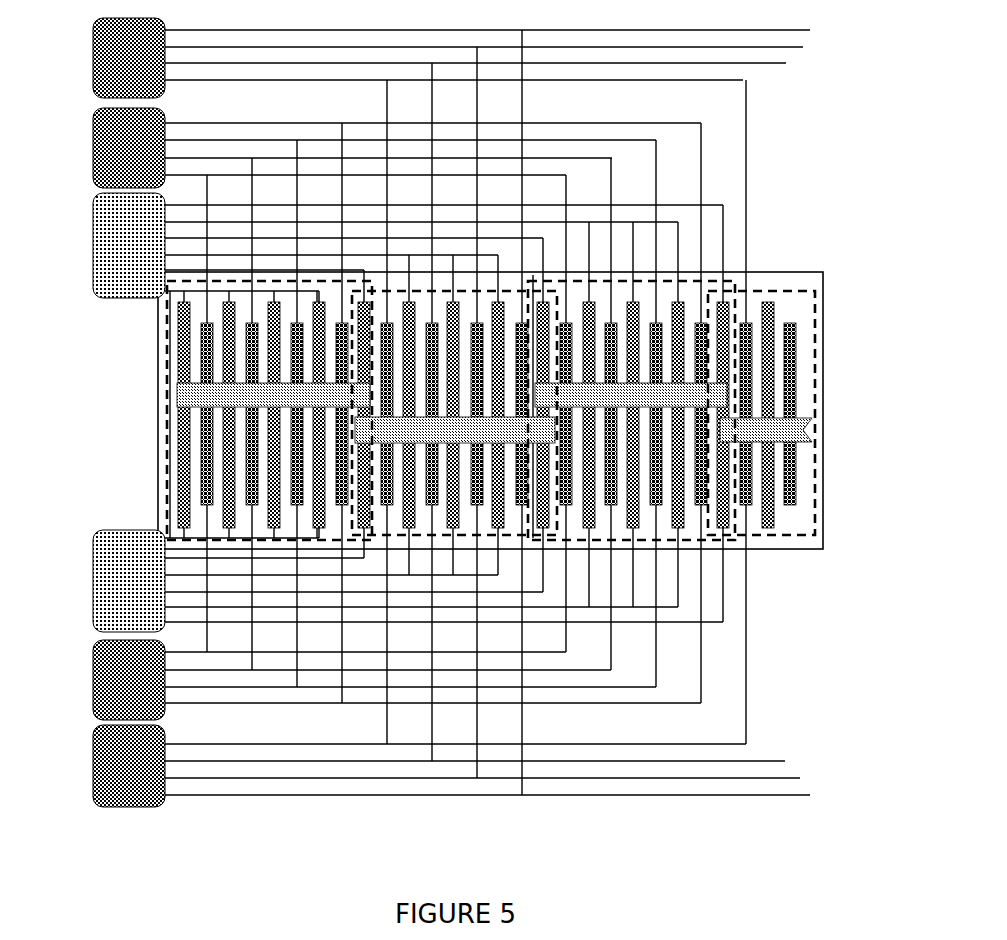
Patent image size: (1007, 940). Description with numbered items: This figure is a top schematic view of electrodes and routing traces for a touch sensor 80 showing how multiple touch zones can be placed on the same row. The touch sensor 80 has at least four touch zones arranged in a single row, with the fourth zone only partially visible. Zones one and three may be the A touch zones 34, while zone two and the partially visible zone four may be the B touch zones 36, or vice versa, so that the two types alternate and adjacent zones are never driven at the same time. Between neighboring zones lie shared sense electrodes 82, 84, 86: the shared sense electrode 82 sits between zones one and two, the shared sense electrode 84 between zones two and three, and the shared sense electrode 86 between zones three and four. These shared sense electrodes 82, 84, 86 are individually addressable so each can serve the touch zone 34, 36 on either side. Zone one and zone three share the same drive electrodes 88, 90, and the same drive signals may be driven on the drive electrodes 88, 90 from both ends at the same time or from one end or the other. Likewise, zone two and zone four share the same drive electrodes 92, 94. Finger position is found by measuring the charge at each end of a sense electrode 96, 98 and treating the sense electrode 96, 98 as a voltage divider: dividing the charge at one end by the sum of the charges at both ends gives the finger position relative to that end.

The touch sensor 80 is at (833, 323).
The shared sense electrode 82 is at (379, 316).
The shared sense electrode 84 is at (561, 316).
The shared sense electrode 86 is at (732, 531).
The touch zone A 34 is at (549, 400).
The touch zone B 36 is at (734, 438).
The drive electrodes 88 is at (82, 131).
The drive electrodes 90 is at (84, 673).
The drive electrodes 92 is at (82, 45).
The drive electrodes 94 is at (82, 757).
The sense electrode 96 is at (89, 241).
The sense electrode 98 is at (87, 570).